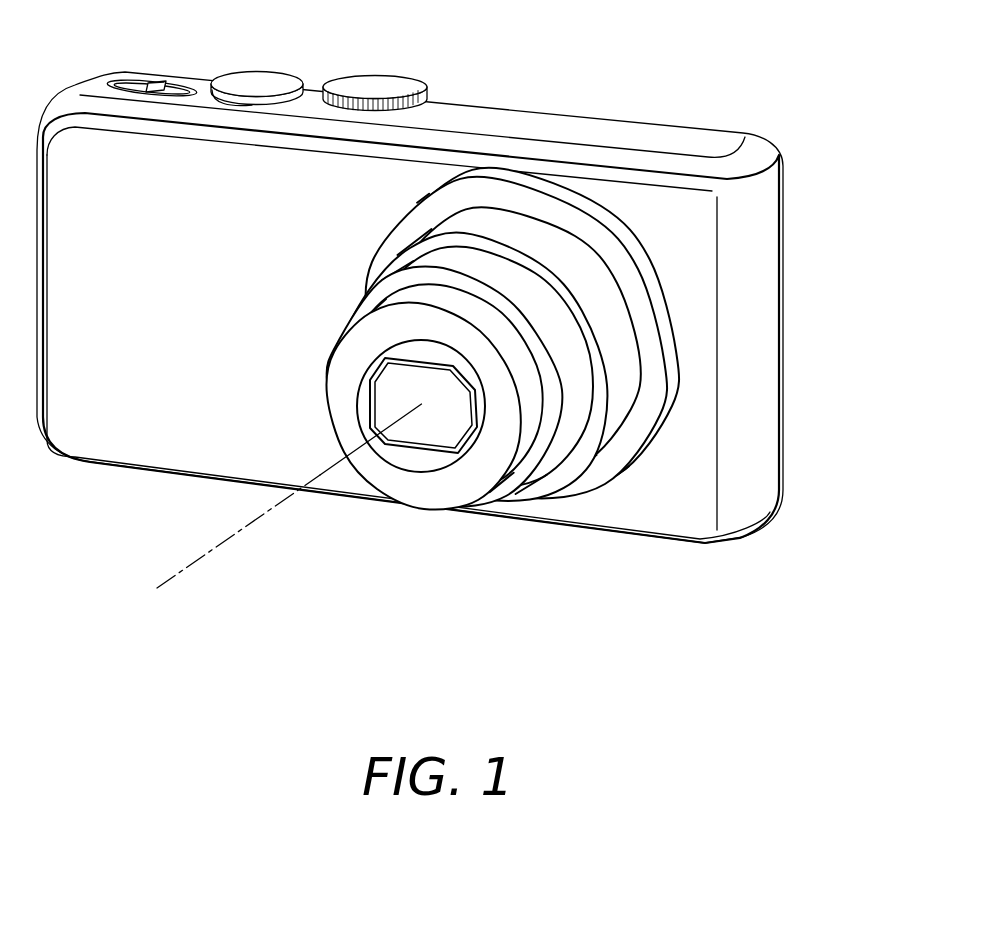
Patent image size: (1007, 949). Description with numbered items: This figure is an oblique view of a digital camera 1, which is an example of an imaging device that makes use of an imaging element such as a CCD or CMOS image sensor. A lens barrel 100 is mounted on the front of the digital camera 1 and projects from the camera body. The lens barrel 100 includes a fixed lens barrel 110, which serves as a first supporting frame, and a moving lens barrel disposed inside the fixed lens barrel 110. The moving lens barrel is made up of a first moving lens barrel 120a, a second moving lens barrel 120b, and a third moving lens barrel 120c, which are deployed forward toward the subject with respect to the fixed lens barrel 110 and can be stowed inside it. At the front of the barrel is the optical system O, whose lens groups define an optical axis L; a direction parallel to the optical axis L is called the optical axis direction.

The digital camera 1 is at (773, 110).
The lens barrel 100 is at (521, 329).
The fixed lens barrel 110 is at (633, 478).
The first moving lens barrel 120a is at (415, 503).
The second moving lens barrel 120b is at (516, 502).
The third moving lens barrel 120c is at (595, 463).
The optical system O is at (406, 451).
The optical axis L is at (276, 509).